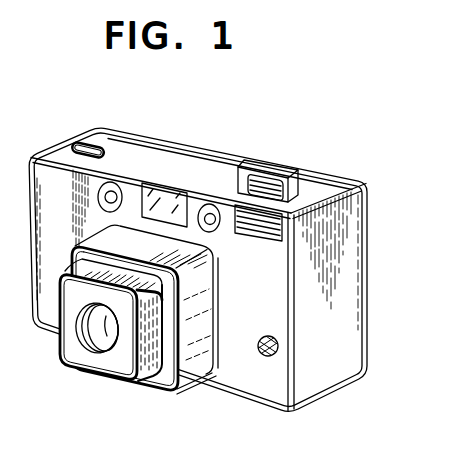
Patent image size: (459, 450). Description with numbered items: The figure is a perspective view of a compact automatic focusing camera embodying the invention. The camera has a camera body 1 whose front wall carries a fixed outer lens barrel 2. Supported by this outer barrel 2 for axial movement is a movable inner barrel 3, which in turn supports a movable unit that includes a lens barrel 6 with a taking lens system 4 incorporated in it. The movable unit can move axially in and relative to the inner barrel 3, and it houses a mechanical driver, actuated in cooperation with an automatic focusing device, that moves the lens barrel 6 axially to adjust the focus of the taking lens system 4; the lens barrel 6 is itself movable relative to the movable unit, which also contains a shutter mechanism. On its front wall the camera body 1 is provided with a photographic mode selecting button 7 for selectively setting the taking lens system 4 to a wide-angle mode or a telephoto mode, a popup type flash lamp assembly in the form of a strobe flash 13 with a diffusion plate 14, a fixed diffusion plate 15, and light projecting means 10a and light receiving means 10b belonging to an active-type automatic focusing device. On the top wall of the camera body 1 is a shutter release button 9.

The camera body 1 is at (242, 383).
The fixed outer lens barrel 2 is at (195, 368).
The movable inner barrel 3 is at (148, 363).
The taking lens system 4 is at (105, 340).
The lens barrel 6 is at (90, 323).
The photographic mode selecting button 7 is at (278, 346).
The shutter release button 9 is at (85, 140).
The light projecting means 10a is at (113, 185).
The light receiving means 10b is at (207, 202).
The strobe flash 13 is at (259, 152).
The diffusion plate 14 is at (247, 180).
The fixed diffusion plate 15 is at (262, 237).